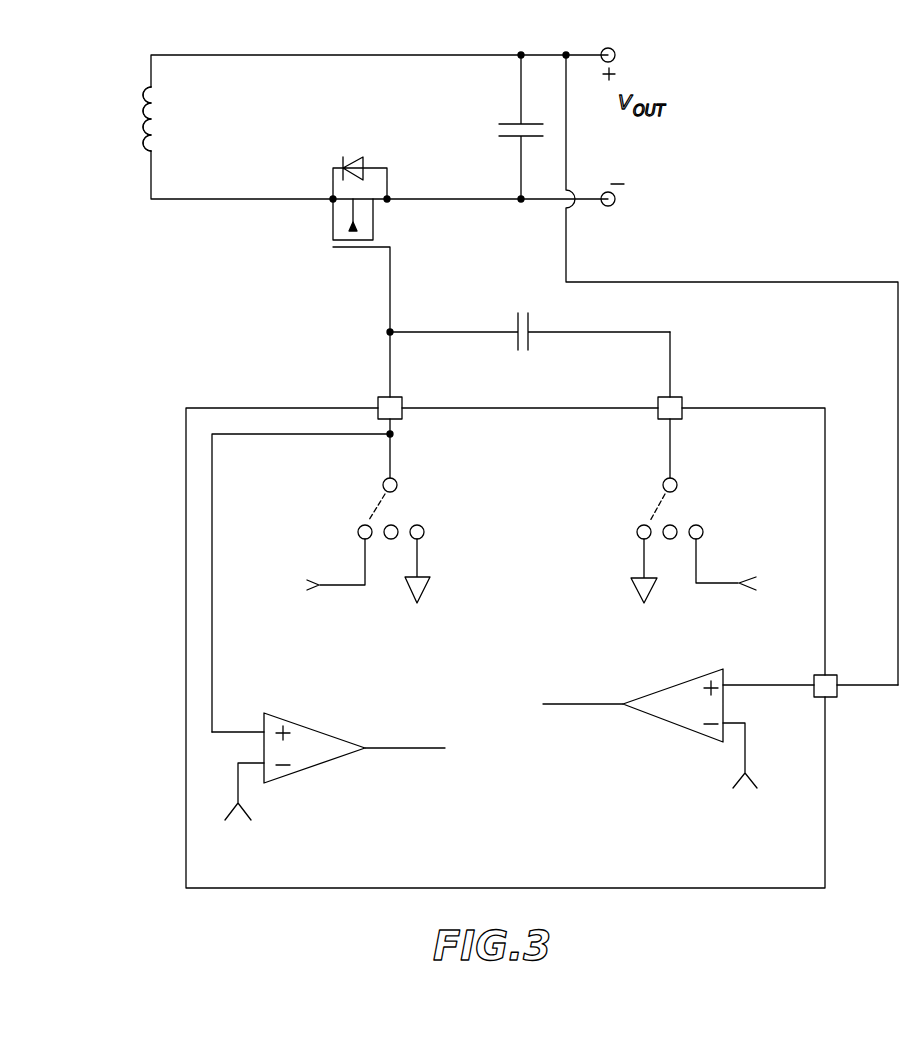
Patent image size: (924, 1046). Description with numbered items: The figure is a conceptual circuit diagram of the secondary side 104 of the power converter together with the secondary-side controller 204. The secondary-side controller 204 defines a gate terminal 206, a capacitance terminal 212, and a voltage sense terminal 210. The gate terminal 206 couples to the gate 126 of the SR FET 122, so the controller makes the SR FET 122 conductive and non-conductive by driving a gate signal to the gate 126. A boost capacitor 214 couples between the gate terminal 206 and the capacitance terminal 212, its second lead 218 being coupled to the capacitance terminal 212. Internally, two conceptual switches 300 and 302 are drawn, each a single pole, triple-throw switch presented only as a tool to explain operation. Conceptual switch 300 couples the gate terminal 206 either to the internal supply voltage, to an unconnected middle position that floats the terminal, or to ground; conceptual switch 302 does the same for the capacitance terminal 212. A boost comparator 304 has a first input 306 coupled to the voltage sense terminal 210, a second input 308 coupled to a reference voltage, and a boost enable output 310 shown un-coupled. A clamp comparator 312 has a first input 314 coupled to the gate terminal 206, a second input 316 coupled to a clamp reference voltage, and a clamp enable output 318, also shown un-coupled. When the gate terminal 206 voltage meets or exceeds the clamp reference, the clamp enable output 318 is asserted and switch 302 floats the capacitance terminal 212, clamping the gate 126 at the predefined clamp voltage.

The secondary side 104 is at (126, 70).
The SR FET 122 is at (150, 138).
The gate 126 is at (388, 249).
The secondary-side controller 204 is at (186, 408).
The gate terminal 206 is at (403, 397).
The voltage sense terminal 210 is at (838, 697).
The capacitance terminal 212 is at (683, 397).
The boost capacitor 214 is at (538, 312).
The second lead 218 is at (672, 352).
The conceptual switch 300 is at (350, 503).
The conceptual switch 302 is at (713, 502).
The boost comparator 304 is at (672, 726).
The first input 306 is at (728, 683).
The second input 308 is at (725, 728).
The boost enable output 310 is at (634, 692).
The clamp comparator 312 is at (318, 722).
The first input 314 is at (260, 730).
The second input 316 is at (262, 770).
The clamp enable output 318 is at (364, 745).